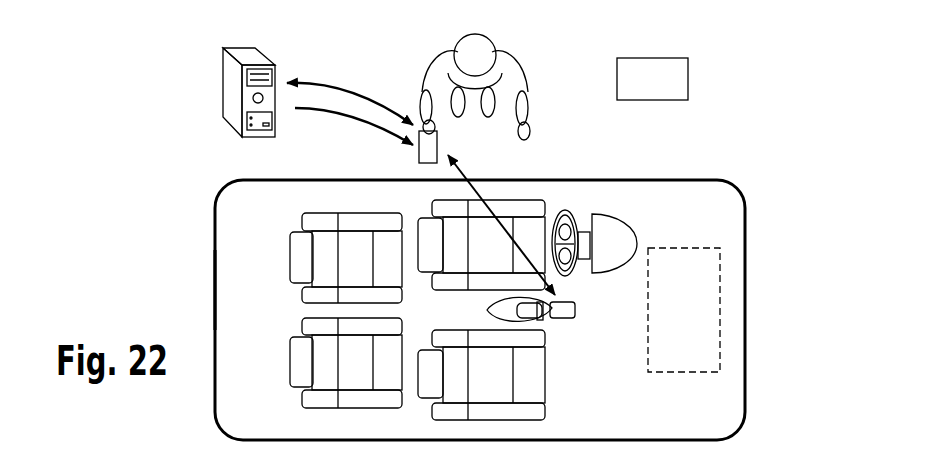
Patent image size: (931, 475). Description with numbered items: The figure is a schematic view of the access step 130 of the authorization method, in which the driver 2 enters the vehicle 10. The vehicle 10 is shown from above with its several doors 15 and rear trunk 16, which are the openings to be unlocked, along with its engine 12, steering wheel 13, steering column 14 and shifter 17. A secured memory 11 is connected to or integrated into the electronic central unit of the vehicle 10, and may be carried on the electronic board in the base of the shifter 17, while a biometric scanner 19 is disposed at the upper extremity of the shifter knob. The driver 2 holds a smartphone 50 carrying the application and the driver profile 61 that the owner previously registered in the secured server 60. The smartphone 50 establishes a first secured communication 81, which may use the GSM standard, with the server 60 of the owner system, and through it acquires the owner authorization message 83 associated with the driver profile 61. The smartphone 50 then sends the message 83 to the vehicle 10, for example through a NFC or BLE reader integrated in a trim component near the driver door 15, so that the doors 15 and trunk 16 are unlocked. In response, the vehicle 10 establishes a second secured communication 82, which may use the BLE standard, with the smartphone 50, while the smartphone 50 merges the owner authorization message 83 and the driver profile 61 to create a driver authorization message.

The driver 2 is at (516, 42).
The vehicle 10 is at (751, 176).
The secured memory 11 is at (568, 302).
The engine 12 is at (684, 310).
The steering wheel 13 is at (567, 210).
The steering column 14 is at (582, 230).
The doors 15 is at (507, 180).
The rear trunk 16 is at (215, 292).
The shifter 17 is at (578, 325).
The biometric scanner 19 is at (543, 318).
The smartphone 50 is at (419, 162).
The secured server 60 is at (223, 90).
The driver profile 61 is at (231, 136).
The first secured communication 81 is at (377, 100).
The second secured communication 82 is at (477, 189).
The owner authorization message 83 is at (337, 118).
The access step 130 is at (652, 79).